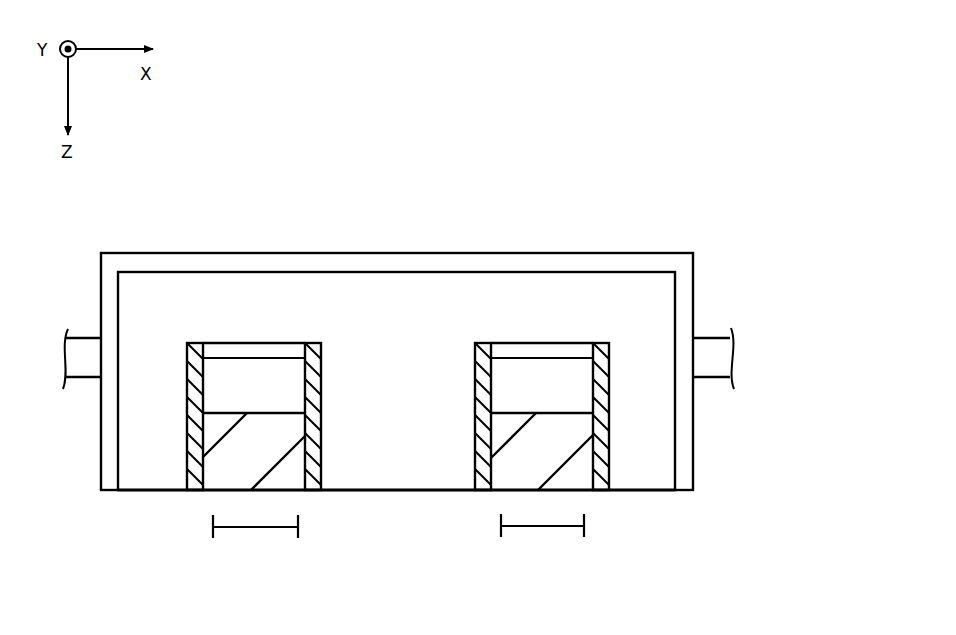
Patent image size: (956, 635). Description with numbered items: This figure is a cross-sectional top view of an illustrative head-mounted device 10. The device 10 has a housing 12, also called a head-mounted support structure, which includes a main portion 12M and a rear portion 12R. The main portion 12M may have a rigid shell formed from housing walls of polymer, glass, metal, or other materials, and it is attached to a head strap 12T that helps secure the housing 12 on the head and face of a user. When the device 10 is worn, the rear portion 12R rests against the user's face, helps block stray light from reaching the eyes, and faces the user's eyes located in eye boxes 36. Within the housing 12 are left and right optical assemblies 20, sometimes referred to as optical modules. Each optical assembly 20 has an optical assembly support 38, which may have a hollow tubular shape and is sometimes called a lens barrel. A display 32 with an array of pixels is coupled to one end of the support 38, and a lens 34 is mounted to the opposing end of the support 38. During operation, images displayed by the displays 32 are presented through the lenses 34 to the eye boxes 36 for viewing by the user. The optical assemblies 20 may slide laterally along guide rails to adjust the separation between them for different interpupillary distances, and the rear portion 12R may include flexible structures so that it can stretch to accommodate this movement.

The head-mounted device 10 is at (674, 154).
The housing 12 is at (74, 252).
The main portion 12M is at (399, 262).
The rear portion 12R is at (410, 492).
The head strap 12T is at (88, 368).
The optical assembly 20 is at (168, 391).
The display 32 is at (257, 350).
The lens 34 is at (500, 432).
The eye box 36 is at (298, 527).
The optical assembly support 38 is at (313, 371).